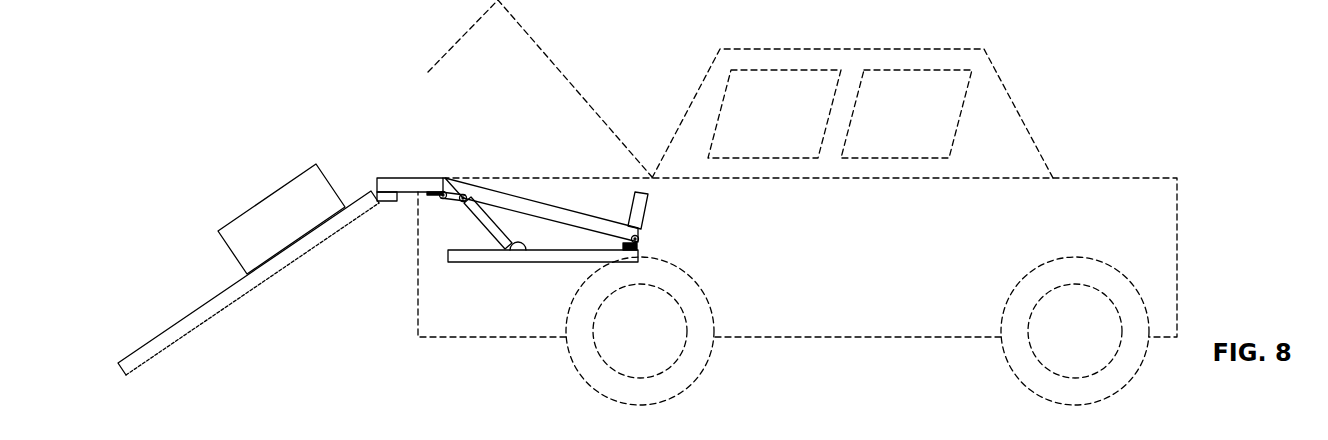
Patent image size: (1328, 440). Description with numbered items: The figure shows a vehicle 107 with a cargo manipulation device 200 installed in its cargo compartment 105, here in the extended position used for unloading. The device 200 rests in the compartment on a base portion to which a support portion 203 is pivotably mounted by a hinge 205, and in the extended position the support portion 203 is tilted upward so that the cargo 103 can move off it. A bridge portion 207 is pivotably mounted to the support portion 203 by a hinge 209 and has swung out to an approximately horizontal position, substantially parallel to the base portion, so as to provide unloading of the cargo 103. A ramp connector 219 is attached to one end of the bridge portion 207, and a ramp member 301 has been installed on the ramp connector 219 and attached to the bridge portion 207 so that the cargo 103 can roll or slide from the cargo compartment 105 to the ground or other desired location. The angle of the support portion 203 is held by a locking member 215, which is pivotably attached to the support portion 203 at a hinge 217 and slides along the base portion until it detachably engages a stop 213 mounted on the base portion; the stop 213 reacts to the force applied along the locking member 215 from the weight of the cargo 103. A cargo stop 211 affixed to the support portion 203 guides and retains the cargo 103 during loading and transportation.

The cargo 103 is at (282, 208).
The cargo compartment 105 is at (506, 114).
The vehicle 107 is at (876, 321).
The cargo manipulation device 200 is at (592, 223).
The support portion 203 is at (533, 204).
The hinge 205 is at (642, 240).
The bridge portion 207 is at (410, 183).
The hinge 209 is at (462, 201).
The cargo stop 211 is at (648, 212).
The stop 213 is at (518, 251).
The locking member 215 is at (492, 235).
The hinge 217 is at (458, 190).
The ramp connector 219 is at (388, 204).
The ramp member 301 is at (293, 262).